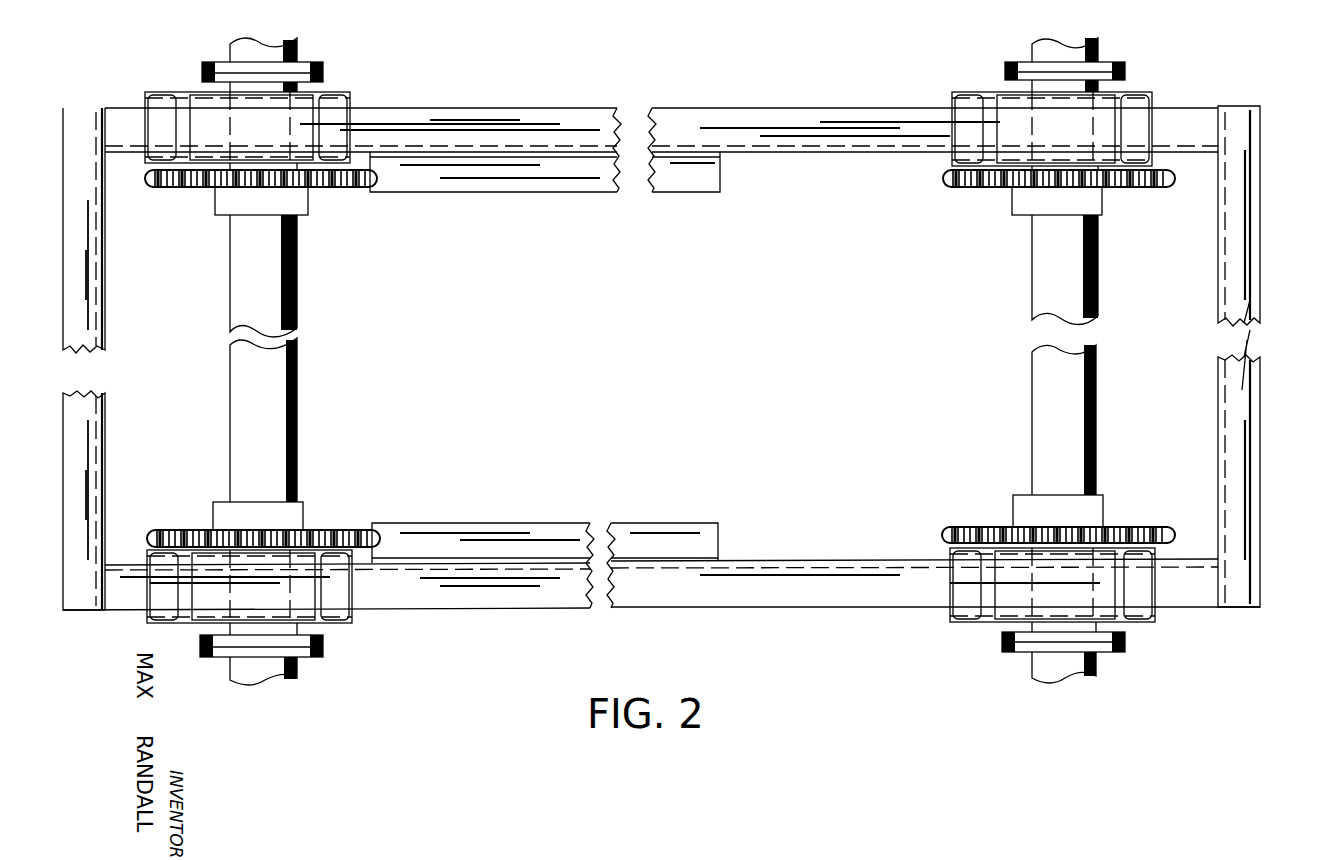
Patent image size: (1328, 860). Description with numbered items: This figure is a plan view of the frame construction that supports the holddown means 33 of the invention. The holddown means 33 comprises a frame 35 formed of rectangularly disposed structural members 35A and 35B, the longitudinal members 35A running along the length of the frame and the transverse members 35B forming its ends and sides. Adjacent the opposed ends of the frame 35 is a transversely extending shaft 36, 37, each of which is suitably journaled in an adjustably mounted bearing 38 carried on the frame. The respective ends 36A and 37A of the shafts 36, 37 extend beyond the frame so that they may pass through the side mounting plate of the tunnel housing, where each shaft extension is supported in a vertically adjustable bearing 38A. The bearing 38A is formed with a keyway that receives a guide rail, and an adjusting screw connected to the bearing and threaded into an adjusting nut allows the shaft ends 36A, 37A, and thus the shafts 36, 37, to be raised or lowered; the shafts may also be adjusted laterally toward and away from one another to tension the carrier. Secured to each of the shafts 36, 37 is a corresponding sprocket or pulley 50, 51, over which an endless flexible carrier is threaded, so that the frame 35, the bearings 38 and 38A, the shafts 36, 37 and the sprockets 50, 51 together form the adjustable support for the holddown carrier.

The holddown means 33 is at (440, 652).
The frame 35 is at (548, 108).
The structural member 35A is at (752, 105).
The structural member 35B is at (103, 267).
The shaft 36 is at (1097, 388).
The shaft end 36A is at (1100, 87).
The shaft 37 is at (295, 430).
The shaft end 37A is at (230, 88).
The adjustably mounted bearing 38 is at (320, 95).
The vertical adjustable bearing 38A is at (190, 135).
The sprocket or pulley 50 is at (318, 188).
The sprocket or pulley 51 is at (322, 530).